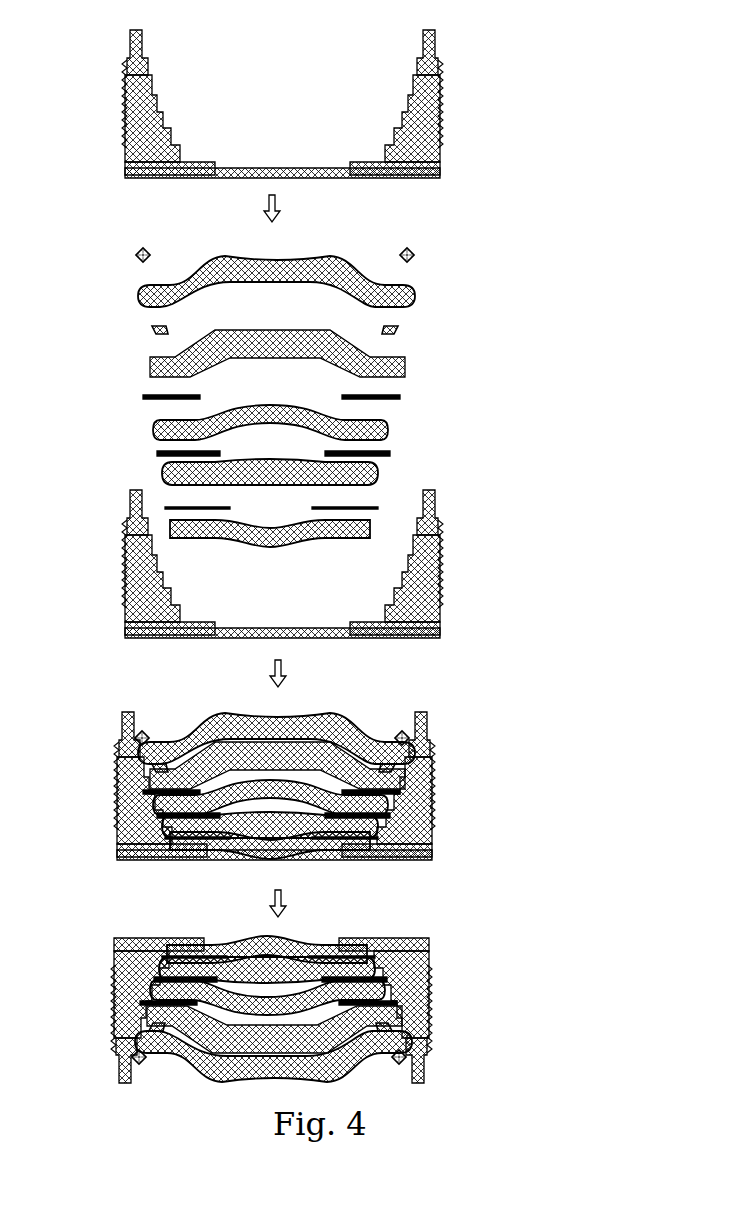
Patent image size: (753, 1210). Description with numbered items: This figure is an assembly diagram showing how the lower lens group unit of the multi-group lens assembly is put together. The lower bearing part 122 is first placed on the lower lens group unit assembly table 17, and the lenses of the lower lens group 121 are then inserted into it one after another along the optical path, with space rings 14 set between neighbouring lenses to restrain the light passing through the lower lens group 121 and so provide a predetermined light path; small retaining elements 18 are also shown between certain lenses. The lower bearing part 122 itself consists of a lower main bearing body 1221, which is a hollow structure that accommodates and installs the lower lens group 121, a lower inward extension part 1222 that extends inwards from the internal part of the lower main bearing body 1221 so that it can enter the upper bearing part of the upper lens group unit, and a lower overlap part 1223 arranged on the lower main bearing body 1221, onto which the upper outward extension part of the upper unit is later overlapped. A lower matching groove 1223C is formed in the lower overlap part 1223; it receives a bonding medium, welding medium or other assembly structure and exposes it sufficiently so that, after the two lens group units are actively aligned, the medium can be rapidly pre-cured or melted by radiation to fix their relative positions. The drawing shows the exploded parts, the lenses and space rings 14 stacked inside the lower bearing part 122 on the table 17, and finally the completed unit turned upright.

The space ring 14 is at (143, 398).
The lower lens group unit assembly table 17 is at (125, 173).
The retaining ring 18 is at (135, 250).
The lower lens group 121 is at (137, 292).
The lower bearing part 122 is at (299, 554).
The lower main bearing body 1221 is at (440, 78).
The lower inward extension part 1222 is at (437, 145).
The lower overlap part 1223 is at (440, 163).
The lower matching groove 1223C is at (123, 147).